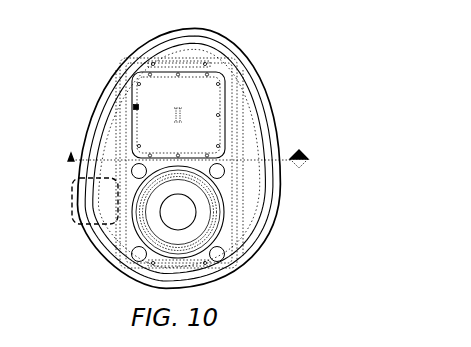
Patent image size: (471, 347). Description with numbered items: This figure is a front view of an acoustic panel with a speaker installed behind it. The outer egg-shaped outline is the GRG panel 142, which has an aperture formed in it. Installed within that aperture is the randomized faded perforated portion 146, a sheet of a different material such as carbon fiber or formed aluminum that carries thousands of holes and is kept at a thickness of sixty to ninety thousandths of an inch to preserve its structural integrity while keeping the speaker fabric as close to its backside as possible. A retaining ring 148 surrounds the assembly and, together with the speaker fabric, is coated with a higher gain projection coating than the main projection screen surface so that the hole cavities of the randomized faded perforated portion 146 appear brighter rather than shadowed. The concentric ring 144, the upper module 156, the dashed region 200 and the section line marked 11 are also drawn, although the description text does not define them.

The section line 11- 11 is at (188, 159).
The GRG panel 142 is at (90, 67).
The intermediate housing ring 144 is at (102, 108).
The randomized faded perforated portion 146 is at (246, 121).
The retaining ring 148 is at (262, 211).
The display module 156 is at (197, 97).
The sensor module 200 is at (72, 205).